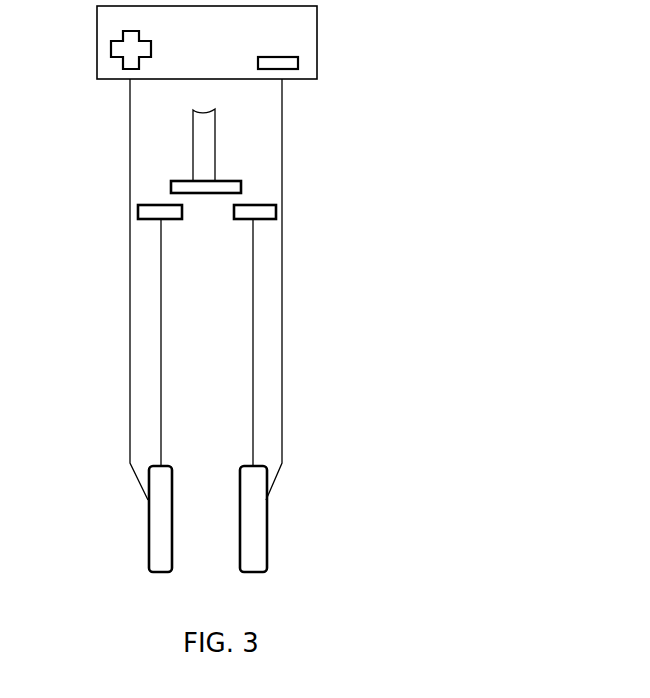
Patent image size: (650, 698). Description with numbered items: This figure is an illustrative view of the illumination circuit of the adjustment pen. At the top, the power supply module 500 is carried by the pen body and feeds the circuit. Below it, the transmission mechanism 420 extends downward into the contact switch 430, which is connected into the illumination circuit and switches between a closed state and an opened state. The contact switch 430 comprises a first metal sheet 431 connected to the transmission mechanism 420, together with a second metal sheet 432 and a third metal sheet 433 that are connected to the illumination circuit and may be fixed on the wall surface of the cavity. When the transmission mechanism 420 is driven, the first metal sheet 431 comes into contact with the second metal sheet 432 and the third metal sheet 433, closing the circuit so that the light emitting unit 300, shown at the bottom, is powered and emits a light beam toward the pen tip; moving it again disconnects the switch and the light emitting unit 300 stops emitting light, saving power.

The power supply module 500 is at (317, 38).
The transmission mechanism 420 is at (213, 144).
The contact switch 430 is at (201, 290).
The first metal sheet 431 is at (241, 190).
The second metal sheet 432 is at (137, 211).
The third metal sheet 433 is at (276, 214).
The light emitting unit 300 is at (163, 552).